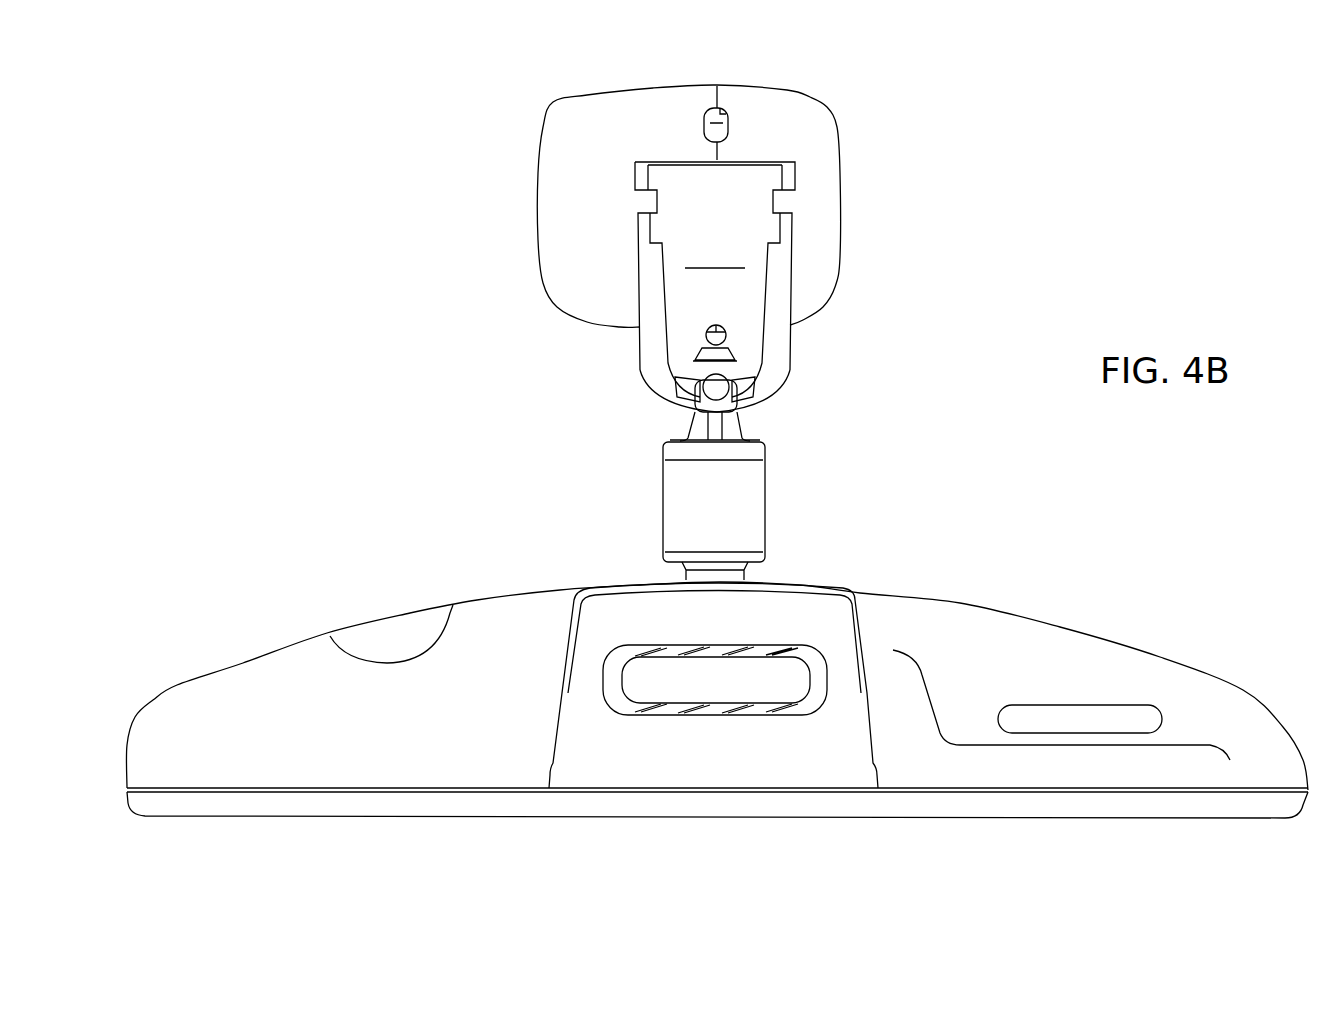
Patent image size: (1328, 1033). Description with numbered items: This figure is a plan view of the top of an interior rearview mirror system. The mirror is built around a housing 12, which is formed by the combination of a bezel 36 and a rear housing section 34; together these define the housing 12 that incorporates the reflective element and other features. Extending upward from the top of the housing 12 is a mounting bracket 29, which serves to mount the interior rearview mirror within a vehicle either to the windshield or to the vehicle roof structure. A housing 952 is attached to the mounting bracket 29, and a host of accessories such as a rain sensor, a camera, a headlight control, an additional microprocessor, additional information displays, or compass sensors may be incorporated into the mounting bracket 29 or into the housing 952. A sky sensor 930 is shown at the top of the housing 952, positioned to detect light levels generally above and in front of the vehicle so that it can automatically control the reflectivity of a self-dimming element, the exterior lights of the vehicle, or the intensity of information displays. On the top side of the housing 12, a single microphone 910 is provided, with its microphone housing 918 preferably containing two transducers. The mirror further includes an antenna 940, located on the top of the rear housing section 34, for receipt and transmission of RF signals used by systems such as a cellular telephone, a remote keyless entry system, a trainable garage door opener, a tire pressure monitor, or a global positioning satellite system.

The housing 12 is at (267, 647).
The mounting bracket 29 is at (606, 447).
The rear housing section 34 is at (933, 623).
The bezel 36 is at (393, 812).
The microphone 910 is at (630, 625).
The microphone housing 918 is at (763, 677).
The sky sensor 930 is at (727, 123).
The antenna 940 is at (1098, 703).
The housing 952 is at (835, 215).